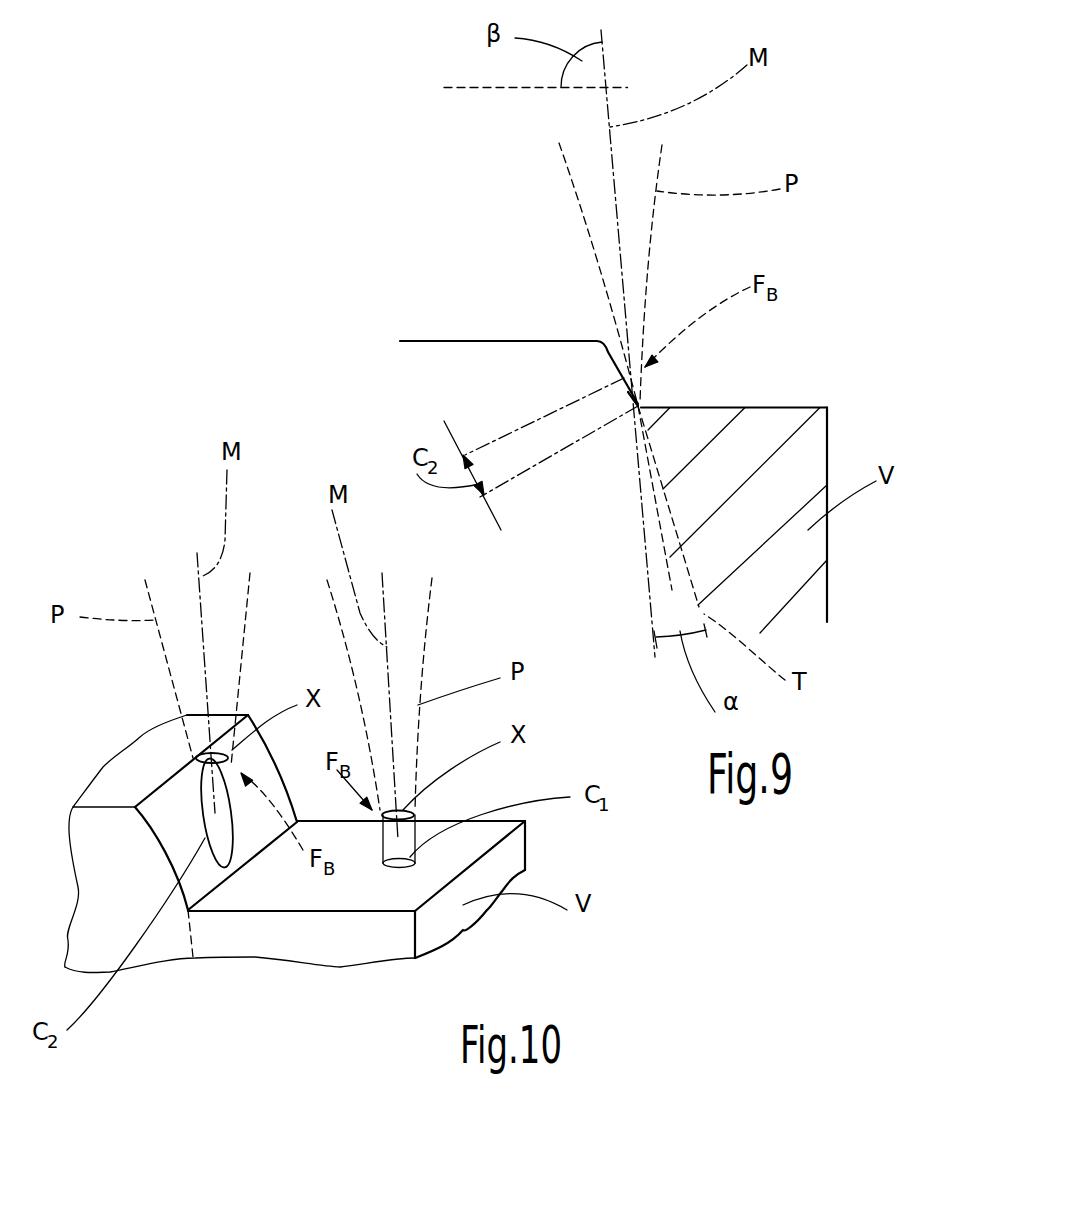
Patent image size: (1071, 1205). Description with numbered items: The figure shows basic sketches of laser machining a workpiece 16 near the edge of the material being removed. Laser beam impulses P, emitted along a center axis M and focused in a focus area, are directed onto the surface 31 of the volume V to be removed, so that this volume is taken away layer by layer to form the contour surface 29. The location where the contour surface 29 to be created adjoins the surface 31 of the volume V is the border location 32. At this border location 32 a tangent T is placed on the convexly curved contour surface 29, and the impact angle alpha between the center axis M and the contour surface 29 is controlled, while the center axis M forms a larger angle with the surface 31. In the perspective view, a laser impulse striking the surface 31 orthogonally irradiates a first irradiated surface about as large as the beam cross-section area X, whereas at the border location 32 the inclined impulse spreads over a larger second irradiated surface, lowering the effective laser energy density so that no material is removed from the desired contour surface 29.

In FIG. 9, the workpiece 16 is at (797, 457).
In FIG. 10, the workpiece 16 is at (356, 949).
In FIG. 9, the contour surface 29 is at (608, 340).
In FIG. 10, the contour surface 29 is at (175, 820).
In FIG. 9, the surface of the volume to be removed 31 is at (797, 399).
In FIG. 10, the surface of the volume to be removed 31 is at (318, 900).
In FIG. 9, the border location 32 is at (634, 411).
In FIG. 10, the border location 32 is at (212, 890).